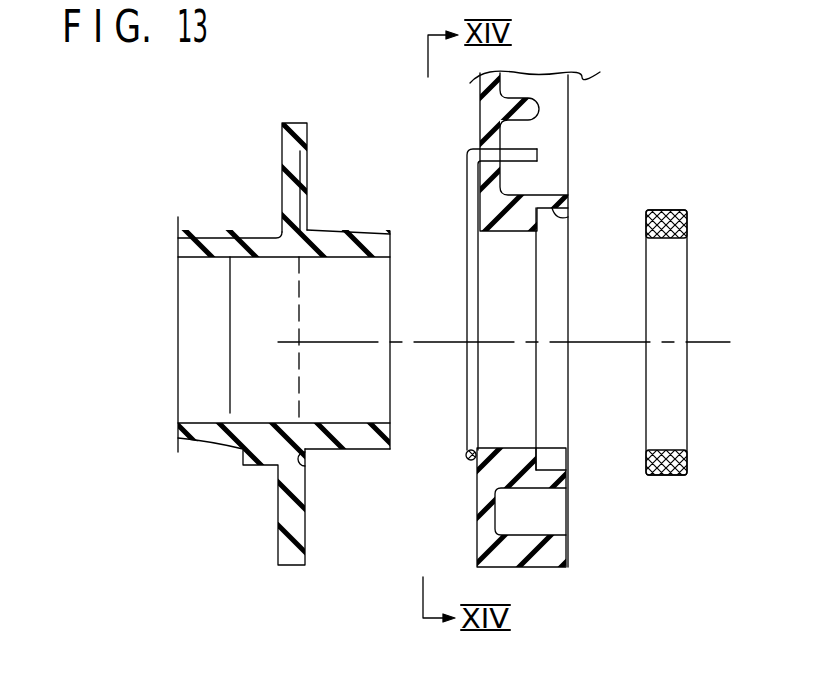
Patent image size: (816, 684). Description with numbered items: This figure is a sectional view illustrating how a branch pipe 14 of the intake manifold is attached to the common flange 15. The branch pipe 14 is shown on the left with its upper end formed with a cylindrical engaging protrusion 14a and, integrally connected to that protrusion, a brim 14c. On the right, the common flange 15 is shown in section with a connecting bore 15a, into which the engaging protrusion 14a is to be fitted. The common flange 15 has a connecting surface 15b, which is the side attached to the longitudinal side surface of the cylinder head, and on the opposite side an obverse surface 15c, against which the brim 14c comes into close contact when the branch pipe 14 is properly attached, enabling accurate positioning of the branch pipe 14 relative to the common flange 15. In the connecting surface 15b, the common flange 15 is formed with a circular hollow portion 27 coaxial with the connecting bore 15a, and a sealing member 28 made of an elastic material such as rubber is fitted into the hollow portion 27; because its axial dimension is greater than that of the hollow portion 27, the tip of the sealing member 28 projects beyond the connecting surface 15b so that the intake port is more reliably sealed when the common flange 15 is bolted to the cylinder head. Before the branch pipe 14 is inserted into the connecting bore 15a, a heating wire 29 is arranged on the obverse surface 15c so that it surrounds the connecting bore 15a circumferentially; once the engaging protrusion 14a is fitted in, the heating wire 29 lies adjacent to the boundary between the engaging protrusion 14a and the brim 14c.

The branch pipe 14 is at (379, 365).
The brim 14c is at (282, 136).
The cylindrical engaging protrusion 14a is at (357, 440).
The common flange 15 is at (408, 342).
The connecting bore 15a is at (493, 242).
The connecting surface 15b is at (568, 553).
The obverse surface 15c is at (480, 113).
The circular hollow portion 27 is at (567, 217).
The sealing member 28 is at (672, 210).
The heating wire 29 is at (467, 463).